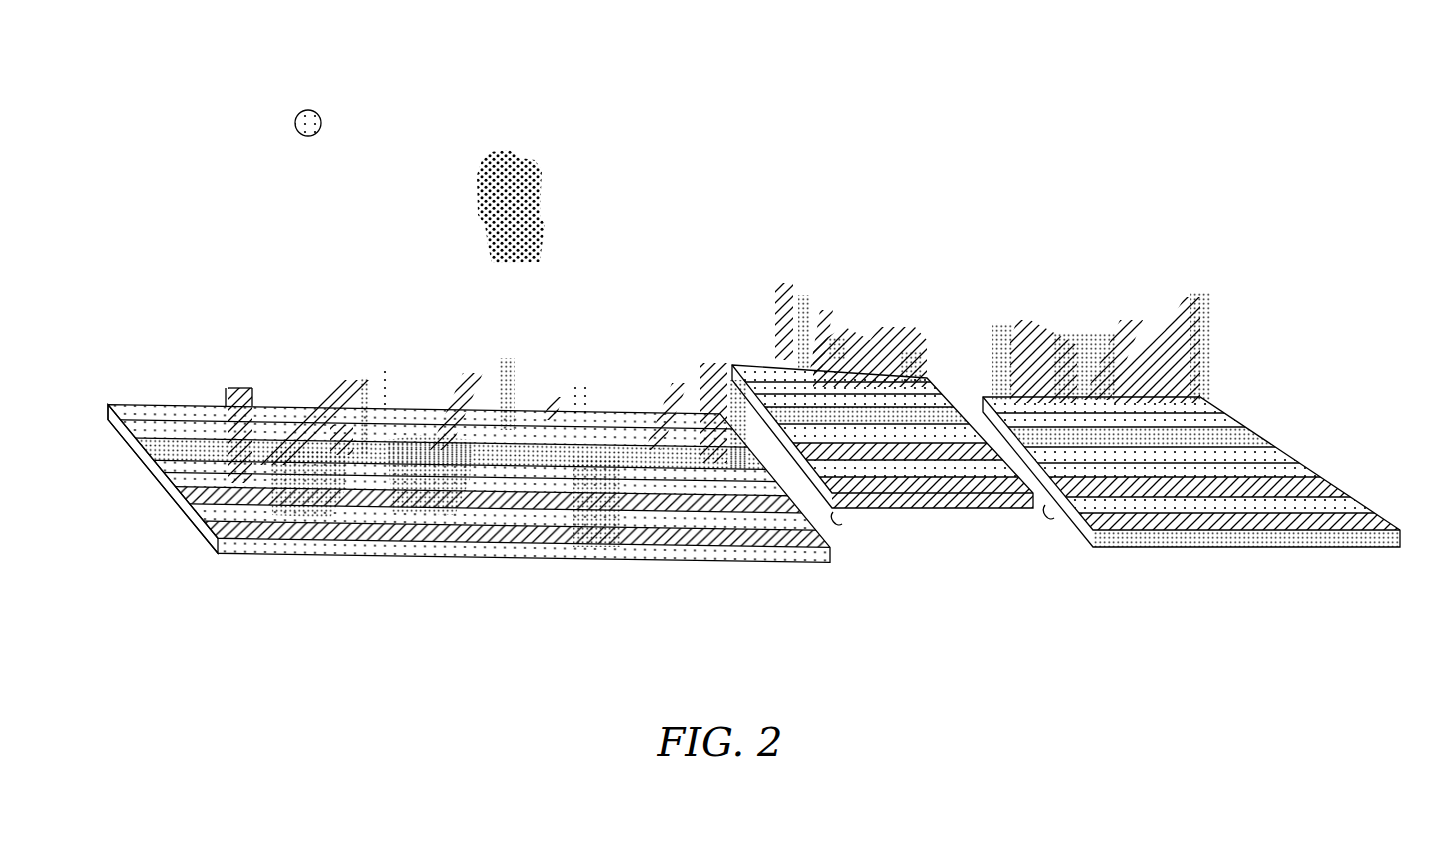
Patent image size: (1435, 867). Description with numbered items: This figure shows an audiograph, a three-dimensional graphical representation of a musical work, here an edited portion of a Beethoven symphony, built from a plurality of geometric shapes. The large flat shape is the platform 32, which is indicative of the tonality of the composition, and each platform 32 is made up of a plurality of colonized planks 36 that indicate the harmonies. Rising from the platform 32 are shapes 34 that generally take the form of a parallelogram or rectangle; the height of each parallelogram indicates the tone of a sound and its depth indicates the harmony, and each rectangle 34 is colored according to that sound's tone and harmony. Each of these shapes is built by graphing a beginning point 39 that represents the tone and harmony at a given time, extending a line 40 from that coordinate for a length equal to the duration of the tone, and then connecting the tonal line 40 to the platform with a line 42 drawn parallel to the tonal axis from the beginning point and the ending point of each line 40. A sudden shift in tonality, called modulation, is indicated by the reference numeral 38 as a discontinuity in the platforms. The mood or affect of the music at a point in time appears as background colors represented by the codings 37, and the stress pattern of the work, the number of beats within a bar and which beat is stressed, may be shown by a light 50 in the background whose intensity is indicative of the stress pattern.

The platform 32 is at (600, 413).
The shapes 34 is at (656, 392).
The colonized planks 36 is at (163, 486).
The codings for affects 37 is at (538, 188).
The shift in tonality 38 is at (836, 522).
The beginning point 39 is at (228, 388).
The line 40 is at (240, 385).
The line parallel to the tonal axis 42 is at (226, 388).
The light 50 is at (300, 109).